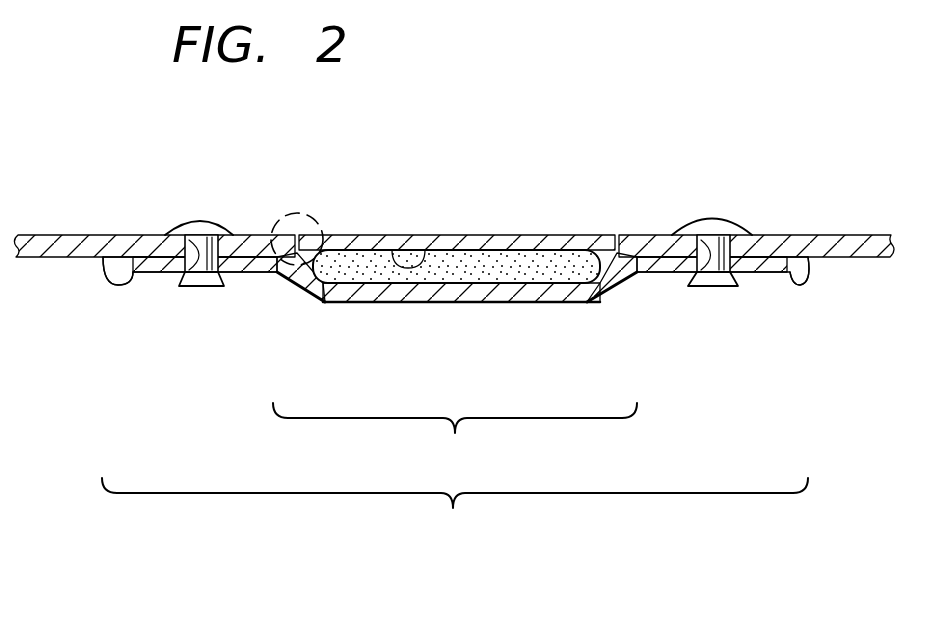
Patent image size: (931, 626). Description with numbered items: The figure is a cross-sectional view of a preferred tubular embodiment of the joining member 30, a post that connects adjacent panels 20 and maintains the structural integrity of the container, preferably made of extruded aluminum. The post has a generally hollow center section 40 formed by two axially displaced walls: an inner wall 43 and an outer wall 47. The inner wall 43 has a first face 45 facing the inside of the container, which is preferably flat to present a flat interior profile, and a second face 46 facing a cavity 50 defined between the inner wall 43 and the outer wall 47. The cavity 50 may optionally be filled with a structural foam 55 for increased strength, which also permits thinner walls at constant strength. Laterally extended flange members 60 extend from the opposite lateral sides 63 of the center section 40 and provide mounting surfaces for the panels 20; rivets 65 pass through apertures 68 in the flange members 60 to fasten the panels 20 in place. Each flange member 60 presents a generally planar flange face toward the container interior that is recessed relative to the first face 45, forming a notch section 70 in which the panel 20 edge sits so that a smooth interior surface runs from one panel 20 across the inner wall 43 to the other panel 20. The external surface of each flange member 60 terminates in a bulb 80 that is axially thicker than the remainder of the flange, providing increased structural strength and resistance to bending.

The panel 20 is at (70, 233).
The joining member 30 is at (492, 142).
The center section 40 is at (455, 437).
The inner wall 43 is at (534, 243).
The first face 45 is at (480, 234).
The second face 46 is at (425, 250).
The outer wall 47 is at (395, 295).
The cavity 50 is at (452, 270).
The structural foam 55 is at (537, 270).
The flange member 60 is at (160, 275).
The lateral side 63 is at (300, 290).
The rivet 65 is at (210, 222).
The aperture 68 is at (195, 287).
The notch section 70 is at (318, 215).
The bulb 80 is at (113, 284).